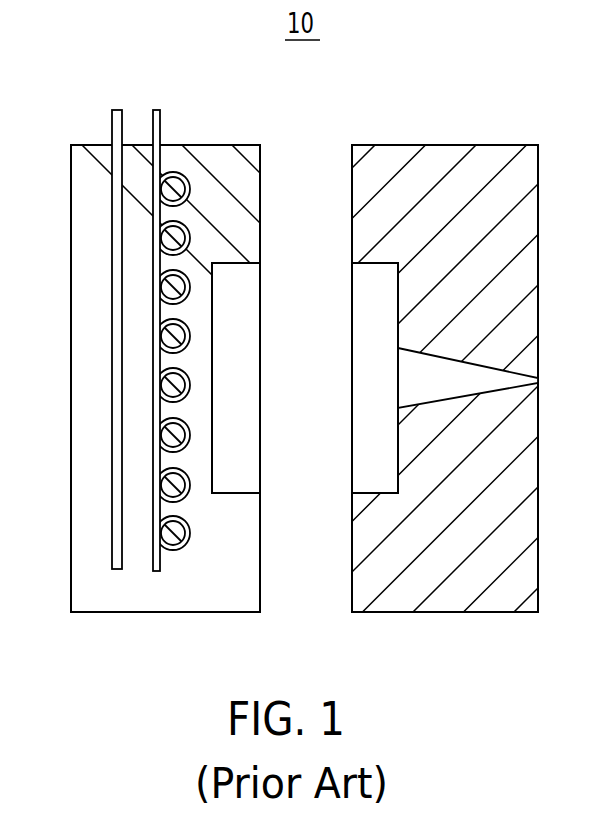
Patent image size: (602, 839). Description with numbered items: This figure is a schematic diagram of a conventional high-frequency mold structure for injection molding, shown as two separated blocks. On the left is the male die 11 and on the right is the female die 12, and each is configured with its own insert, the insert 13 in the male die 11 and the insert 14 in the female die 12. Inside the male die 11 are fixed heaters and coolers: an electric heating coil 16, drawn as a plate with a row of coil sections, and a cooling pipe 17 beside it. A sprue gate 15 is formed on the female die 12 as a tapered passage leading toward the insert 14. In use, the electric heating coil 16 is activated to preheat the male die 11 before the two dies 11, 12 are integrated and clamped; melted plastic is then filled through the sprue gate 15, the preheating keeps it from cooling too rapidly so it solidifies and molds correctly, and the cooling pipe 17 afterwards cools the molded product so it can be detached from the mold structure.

The male die 11 is at (73, 214).
The female die 12 is at (534, 213).
The insert 13 is at (252, 362).
The insert 14 is at (356, 441).
The sprue gate 15 is at (532, 380).
The electric heating coil 16 is at (110, 122).
The cooling pipe 17 is at (157, 122).